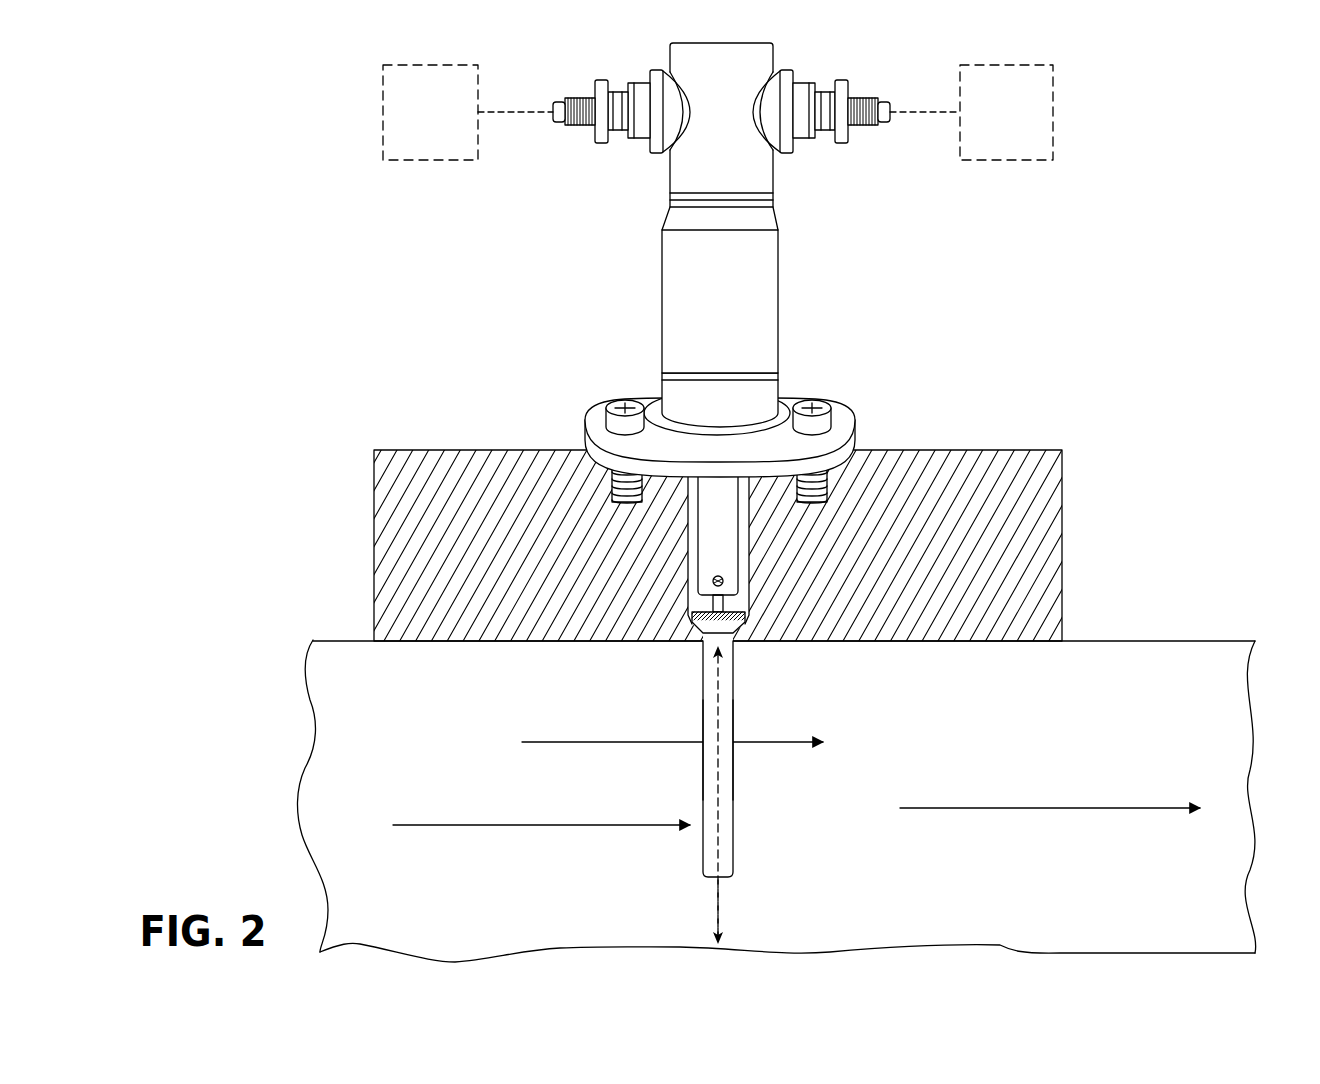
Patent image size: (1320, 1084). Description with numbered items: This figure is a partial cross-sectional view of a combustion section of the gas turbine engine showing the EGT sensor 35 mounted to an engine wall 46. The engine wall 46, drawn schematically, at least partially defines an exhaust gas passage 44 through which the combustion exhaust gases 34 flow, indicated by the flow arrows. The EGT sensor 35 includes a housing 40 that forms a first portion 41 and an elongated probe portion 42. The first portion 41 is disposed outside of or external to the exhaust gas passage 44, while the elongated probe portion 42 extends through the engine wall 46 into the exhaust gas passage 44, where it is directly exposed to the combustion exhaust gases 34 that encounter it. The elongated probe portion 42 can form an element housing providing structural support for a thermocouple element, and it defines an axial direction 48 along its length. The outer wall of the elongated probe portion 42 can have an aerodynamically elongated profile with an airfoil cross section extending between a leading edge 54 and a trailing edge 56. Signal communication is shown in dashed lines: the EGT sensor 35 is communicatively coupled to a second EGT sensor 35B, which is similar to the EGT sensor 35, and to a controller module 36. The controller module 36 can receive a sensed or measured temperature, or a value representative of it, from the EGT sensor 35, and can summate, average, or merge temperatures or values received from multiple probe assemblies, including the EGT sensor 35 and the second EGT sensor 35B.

The combustion exhaust gases 34 is at (1043, 810).
The EGT sensor 35 is at (1152, 158).
The second EGT sensor 35B is at (990, 124).
The controller module 36 is at (419, 124).
The housing 40 is at (866, 424).
The first portion 41 is at (765, 297).
The elongated probe portion 42 is at (760, 664).
The exhaust gas passage 44 is at (507, 687).
The engine wall 46 is at (460, 468).
The axial direction 48 is at (722, 905).
The leading edge 54 is at (703, 796).
The trailing edge 56 is at (733, 797).